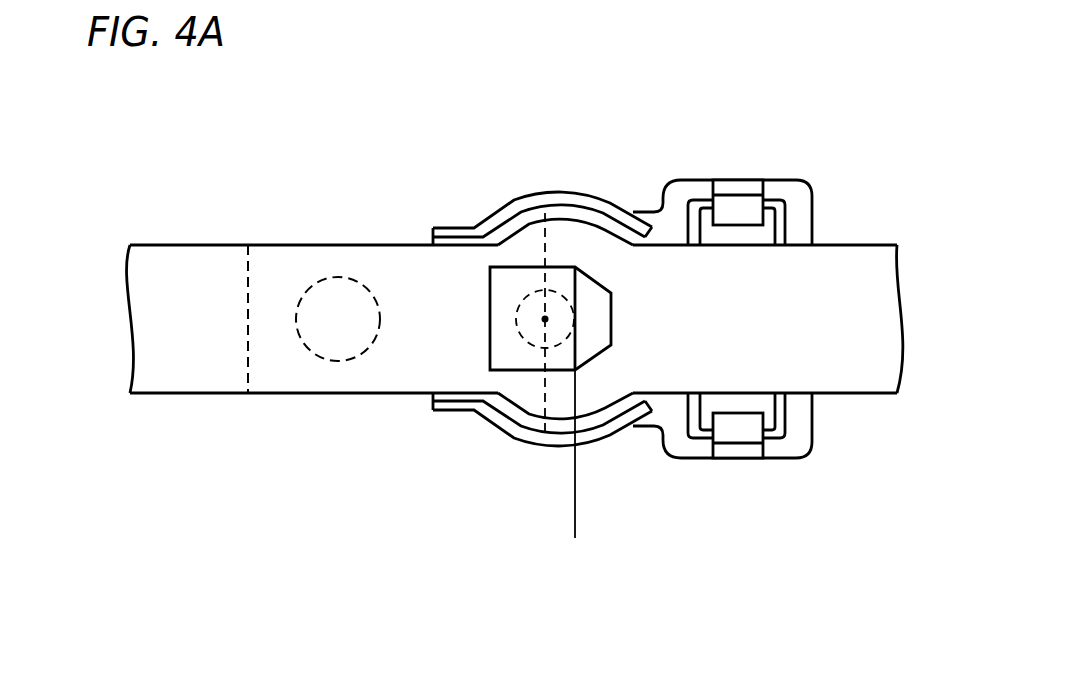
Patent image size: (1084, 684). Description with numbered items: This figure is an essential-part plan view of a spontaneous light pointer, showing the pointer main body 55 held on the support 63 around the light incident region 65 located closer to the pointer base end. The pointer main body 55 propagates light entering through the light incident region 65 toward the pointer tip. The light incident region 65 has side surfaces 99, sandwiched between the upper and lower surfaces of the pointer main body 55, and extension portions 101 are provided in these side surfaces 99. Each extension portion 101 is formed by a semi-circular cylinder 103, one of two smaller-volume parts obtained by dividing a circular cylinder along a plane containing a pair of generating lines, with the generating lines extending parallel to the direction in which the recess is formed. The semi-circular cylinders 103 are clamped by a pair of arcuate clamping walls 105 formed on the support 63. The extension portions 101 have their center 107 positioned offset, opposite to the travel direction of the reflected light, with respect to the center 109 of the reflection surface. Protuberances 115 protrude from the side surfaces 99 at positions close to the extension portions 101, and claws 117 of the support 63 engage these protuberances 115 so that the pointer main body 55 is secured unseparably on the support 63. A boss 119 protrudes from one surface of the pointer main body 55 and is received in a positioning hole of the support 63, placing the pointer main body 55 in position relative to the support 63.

The pointer main body 55 is at (203, 206).
The support 63 is at (794, 483).
The light incident region 65 is at (553, 163).
The side surfaces 99 is at (383, 243).
The extension portions 101 is at (593, 201).
The semi-circular cylinders 103 is at (613, 245).
The arcuate clamping walls 105 is at (460, 228).
The center 107 is at (578, 495).
The center 109 is at (503, 450).
The protuberances 115 is at (782, 222).
The claws 117 is at (737, 207).
The boss 119 is at (305, 346).